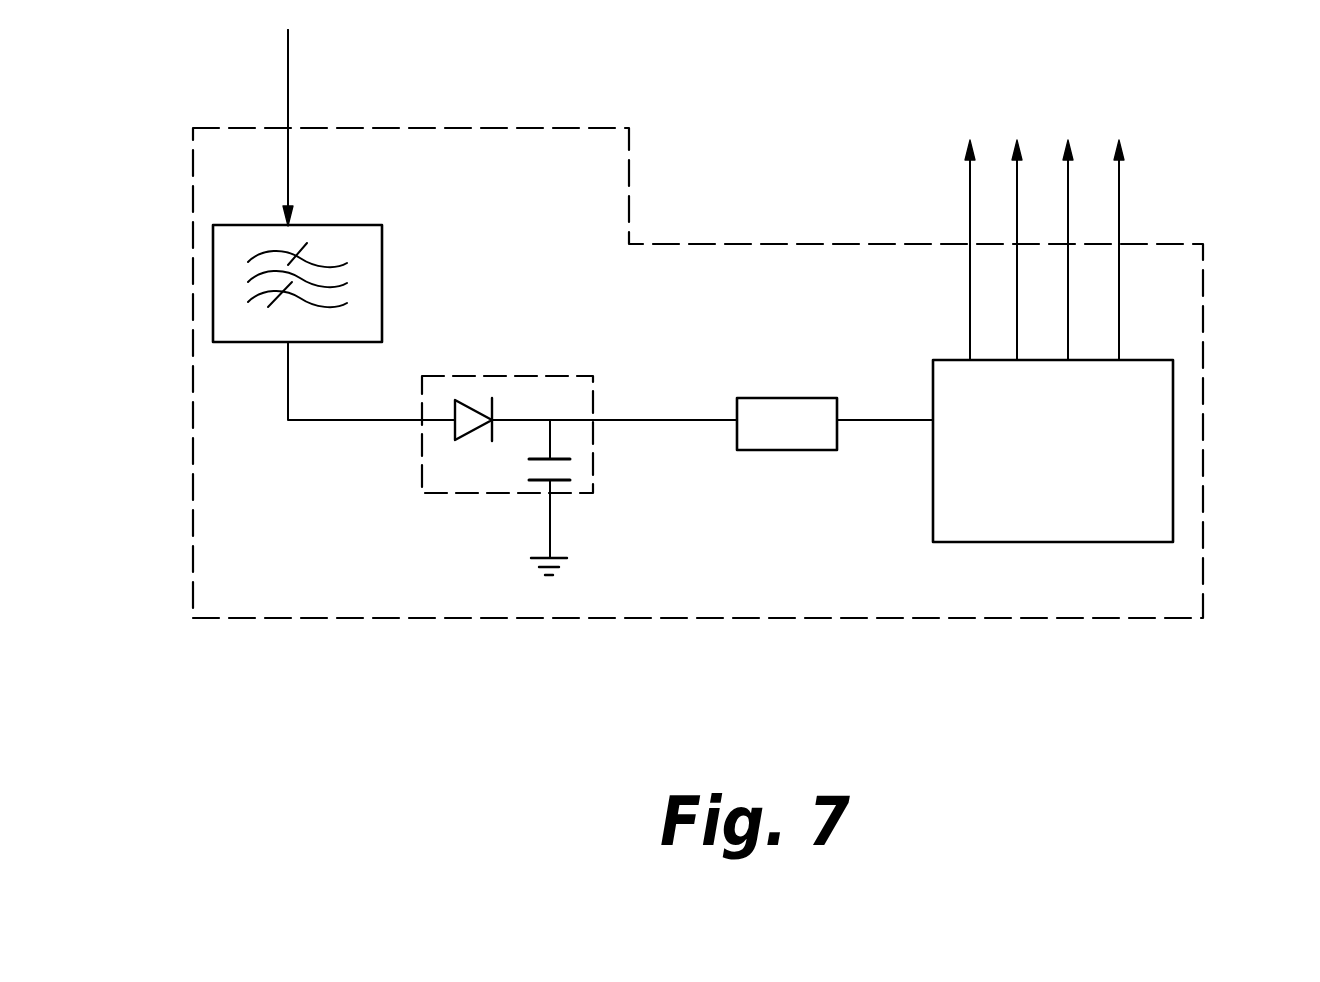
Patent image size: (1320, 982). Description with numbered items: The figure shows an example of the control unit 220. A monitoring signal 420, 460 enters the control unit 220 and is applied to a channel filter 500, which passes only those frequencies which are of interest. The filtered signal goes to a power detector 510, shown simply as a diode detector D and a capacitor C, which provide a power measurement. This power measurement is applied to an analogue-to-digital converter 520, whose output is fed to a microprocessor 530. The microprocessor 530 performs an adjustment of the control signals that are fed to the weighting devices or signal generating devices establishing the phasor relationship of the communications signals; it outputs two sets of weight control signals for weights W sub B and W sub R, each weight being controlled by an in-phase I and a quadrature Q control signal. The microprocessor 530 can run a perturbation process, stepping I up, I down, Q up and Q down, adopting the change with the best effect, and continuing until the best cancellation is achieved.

The control unit 220 is at (1177, 236).
The monitoring signal 420 is at (360, 117).
The monitoring signal 460 is at (363, 109).
The channel filter 500 is at (388, 262).
The power detector 510 is at (532, 366).
The analogue-to-digital converter 520 is at (782, 389).
The microprocessor 530 is at (1160, 532).